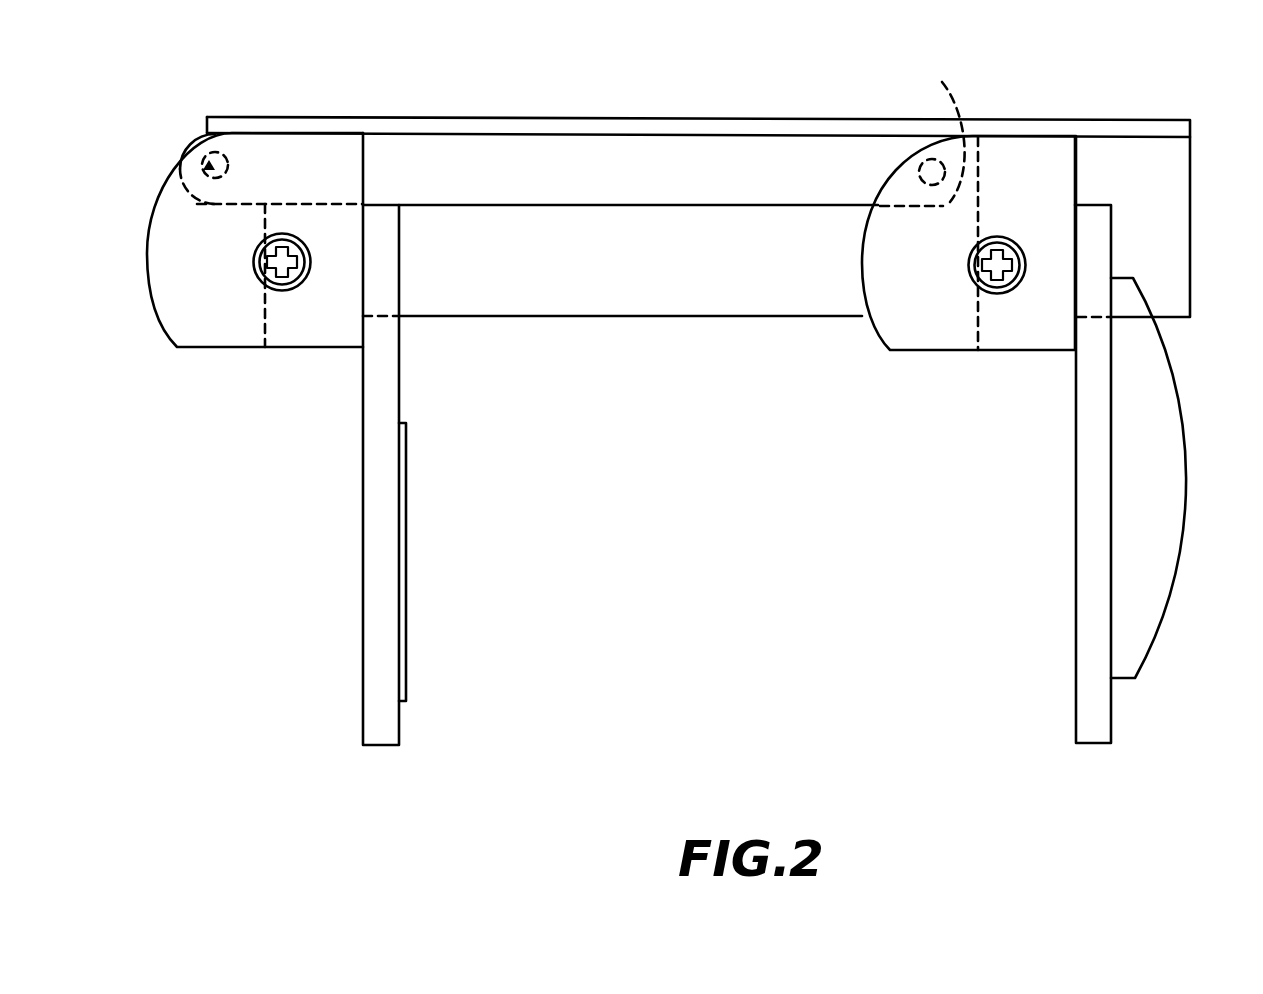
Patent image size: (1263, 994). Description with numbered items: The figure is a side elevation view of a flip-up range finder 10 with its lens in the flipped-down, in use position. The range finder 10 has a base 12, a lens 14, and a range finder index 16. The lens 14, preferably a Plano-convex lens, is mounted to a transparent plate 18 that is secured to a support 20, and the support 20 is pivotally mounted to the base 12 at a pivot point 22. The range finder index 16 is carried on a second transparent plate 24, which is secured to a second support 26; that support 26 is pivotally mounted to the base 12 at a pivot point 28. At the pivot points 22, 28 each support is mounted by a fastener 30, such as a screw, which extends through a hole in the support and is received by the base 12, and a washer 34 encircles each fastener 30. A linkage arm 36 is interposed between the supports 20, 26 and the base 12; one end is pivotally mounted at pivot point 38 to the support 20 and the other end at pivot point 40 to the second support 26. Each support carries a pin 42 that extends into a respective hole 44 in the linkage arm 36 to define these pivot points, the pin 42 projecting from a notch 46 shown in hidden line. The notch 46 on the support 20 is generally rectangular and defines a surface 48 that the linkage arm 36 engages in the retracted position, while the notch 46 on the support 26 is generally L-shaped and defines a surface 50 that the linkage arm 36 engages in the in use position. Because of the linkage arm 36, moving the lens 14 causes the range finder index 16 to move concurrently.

The flip-up range finder 10 is at (990, 93).
The base 12 is at (1183, 153).
The lens 14 is at (1173, 434).
The range finder index 16 is at (408, 506).
The transparent plate 18 is at (1102, 729).
The support 20 is at (1003, 160).
The pivot point 22 is at (995, 252).
The second transparent plate 24 is at (390, 732).
The second support 26 is at (177, 325).
The pivot point 28 is at (283, 268).
The fastener 30 is at (283, 291).
The washer 34 is at (293, 246).
The linkage arm 36 is at (392, 152).
The pivot point 38 is at (930, 168).
The pivot point 40 is at (208, 168).
The pin 42 is at (183, 145).
The hole 44 is at (227, 163).
The notch 46 is at (263, 212).
The surface 48 is at (977, 333).
The surface 50 is at (280, 207).